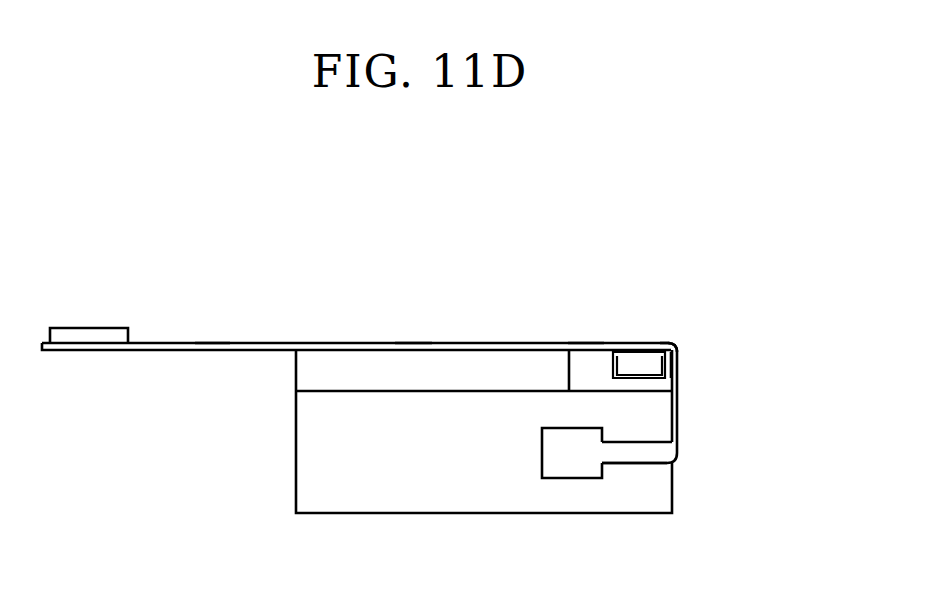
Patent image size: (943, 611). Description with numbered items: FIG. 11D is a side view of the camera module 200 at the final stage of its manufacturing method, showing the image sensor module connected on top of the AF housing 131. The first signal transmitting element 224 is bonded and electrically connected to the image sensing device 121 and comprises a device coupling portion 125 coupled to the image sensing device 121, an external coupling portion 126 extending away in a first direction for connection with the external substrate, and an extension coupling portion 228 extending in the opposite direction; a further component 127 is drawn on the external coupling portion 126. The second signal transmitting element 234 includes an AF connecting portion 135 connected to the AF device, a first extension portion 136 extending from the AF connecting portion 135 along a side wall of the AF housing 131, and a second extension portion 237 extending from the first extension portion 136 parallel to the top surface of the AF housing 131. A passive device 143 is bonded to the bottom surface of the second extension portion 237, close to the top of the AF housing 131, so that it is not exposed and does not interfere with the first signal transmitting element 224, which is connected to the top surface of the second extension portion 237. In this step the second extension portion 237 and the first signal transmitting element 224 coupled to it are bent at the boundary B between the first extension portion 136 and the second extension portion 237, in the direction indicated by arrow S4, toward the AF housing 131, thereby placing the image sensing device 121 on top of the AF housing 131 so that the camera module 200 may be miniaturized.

The camera module 200 is at (717, 272).
The first signal transmitting element 224 is at (593, 278).
The component on cover 127 is at (92, 335).
The external coupling portion 126 is at (212, 343).
The device coupling portion 125 is at (413, 343).
The image sensing device 121 is at (503, 362).
The extension coupling portion 228 is at (586, 343).
The passive device 143 is at (641, 365).
The second extension portion 237 is at (677, 343).
The boundary B is at (675, 365).
The first extension portion 136 is at (676, 403).
The second signal transmitting element 234 is at (752, 347).
The AF connecting portion 135 is at (632, 453).
The AF housing 131 is at (424, 500).
The direction S4 is at (170, 450).